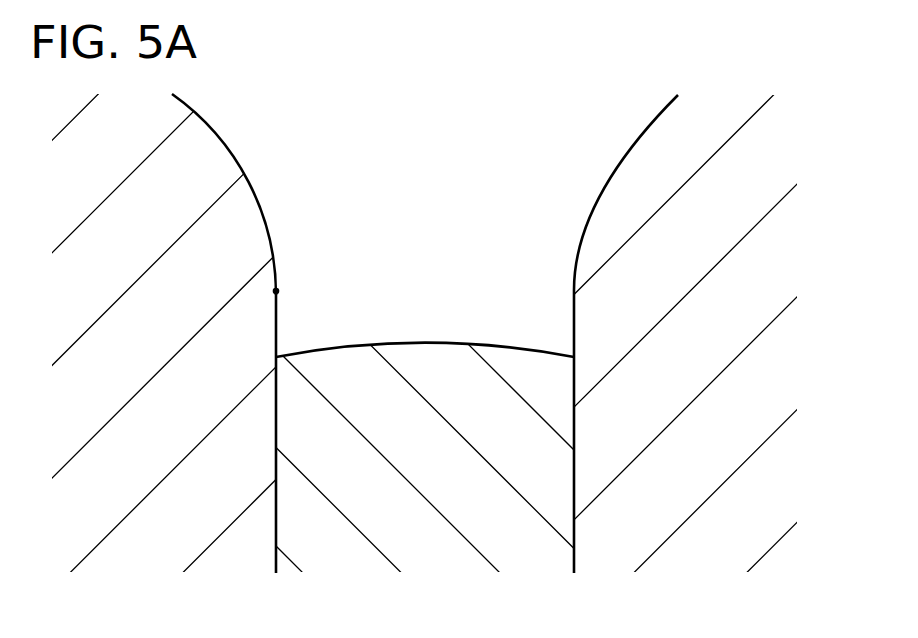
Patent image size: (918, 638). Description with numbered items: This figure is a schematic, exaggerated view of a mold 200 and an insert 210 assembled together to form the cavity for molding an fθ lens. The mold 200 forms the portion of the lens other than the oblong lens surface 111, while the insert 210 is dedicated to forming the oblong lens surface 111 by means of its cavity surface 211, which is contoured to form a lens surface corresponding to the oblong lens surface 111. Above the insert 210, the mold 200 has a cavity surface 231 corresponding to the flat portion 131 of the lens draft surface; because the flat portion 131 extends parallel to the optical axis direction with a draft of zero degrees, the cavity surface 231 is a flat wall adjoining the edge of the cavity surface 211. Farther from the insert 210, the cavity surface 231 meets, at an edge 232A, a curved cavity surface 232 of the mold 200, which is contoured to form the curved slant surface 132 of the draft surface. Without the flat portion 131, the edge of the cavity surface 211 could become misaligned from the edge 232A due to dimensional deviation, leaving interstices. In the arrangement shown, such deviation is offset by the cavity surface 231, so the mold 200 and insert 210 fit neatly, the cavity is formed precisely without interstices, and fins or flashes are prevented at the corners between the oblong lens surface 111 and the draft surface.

The mold 200 is at (167, 503).
The insert 210 is at (412, 319).
The cavity surface 211 is at (425, 307).
The oblong lens surface 111 is at (447, 343).
The cavity surface 231 is at (360, 432).
The flat portion 131 is at (277, 319).
The curved cavity surface 232 is at (302, 194).
The slant surface 132 is at (252, 187).
The edge of curved cavity surface 232A is at (278, 291).